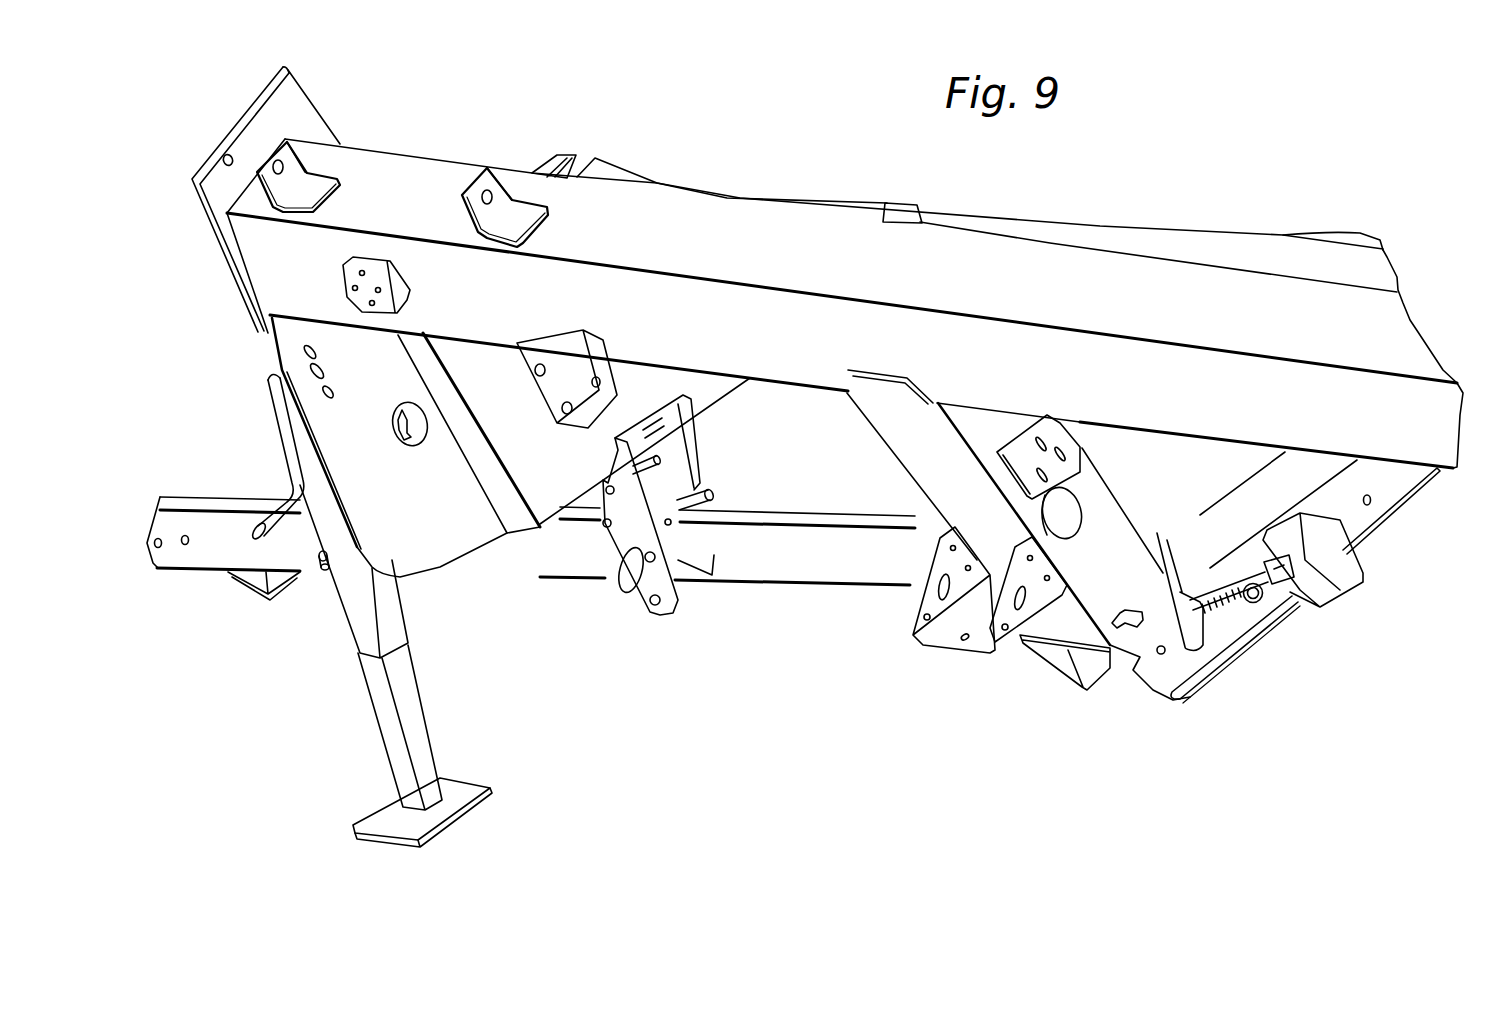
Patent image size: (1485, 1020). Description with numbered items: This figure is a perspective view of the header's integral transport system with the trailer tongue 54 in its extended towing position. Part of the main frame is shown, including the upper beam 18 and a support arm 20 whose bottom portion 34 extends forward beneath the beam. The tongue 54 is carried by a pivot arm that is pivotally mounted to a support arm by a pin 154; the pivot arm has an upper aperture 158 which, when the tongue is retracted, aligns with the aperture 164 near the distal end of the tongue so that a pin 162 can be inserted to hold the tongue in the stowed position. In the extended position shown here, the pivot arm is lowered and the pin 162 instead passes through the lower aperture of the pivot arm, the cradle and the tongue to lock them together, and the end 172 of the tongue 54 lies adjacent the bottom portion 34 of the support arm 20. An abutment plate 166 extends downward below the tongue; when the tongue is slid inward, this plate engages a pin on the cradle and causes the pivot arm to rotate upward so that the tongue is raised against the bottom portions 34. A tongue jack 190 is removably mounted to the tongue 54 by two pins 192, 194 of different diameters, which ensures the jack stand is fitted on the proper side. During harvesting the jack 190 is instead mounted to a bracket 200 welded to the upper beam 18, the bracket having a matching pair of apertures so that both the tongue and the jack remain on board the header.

The upper beam 18 is at (722, 220).
The support arm 20 is at (1080, 485).
The bottom portion 34 is at (1385, 486).
The tongue 54 is at (807, 590).
The pin 154 is at (660, 430).
The upper aperture 158 is at (663, 452).
The pin 162 is at (710, 583).
The aperture 164 is at (190, 560).
The abutment plate 166 is at (257, 597).
The end of the tongue 172 is at (1360, 603).
The tongue jack 190 is at (347, 637).
The pin 192 is at (318, 570).
The pin 194 is at (382, 596).
The bracket 200 is at (585, 330).